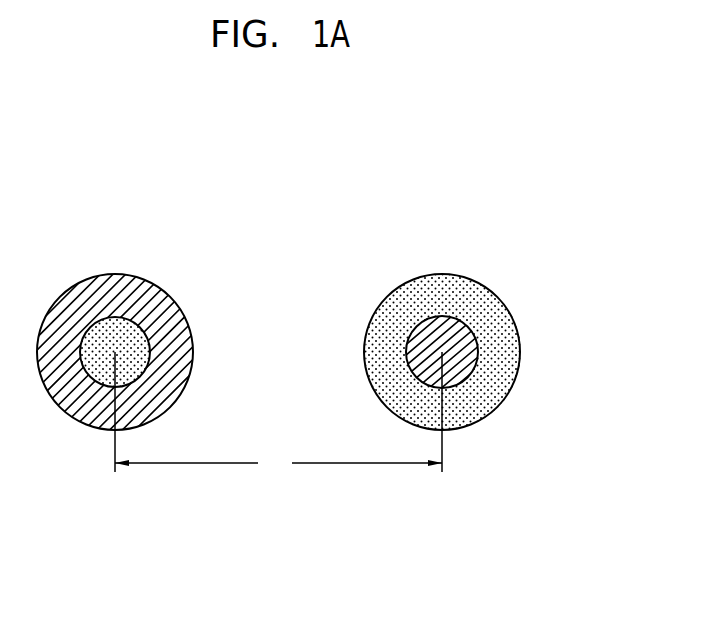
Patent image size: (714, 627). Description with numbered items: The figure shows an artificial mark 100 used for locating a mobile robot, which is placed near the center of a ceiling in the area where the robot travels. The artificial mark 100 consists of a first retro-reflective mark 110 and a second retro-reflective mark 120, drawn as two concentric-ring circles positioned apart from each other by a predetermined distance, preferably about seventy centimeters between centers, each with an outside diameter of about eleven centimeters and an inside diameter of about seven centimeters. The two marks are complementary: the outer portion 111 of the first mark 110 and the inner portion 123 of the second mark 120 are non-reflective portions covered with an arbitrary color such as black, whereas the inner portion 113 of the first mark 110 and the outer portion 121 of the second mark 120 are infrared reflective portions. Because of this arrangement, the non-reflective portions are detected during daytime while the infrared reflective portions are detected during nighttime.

The artificial mark 100 is at (302, 308).
The first retro-reflective mark 110 is at (189, 343).
The outer portion of the first mark 111 is at (185, 348).
The inner portion of the first mark 113 is at (148, 321).
The second retro-reflective mark 120 is at (480, 343).
The outer portion of the second mark 121 is at (510, 347).
The inner portion of the second mark 123 is at (472, 354).